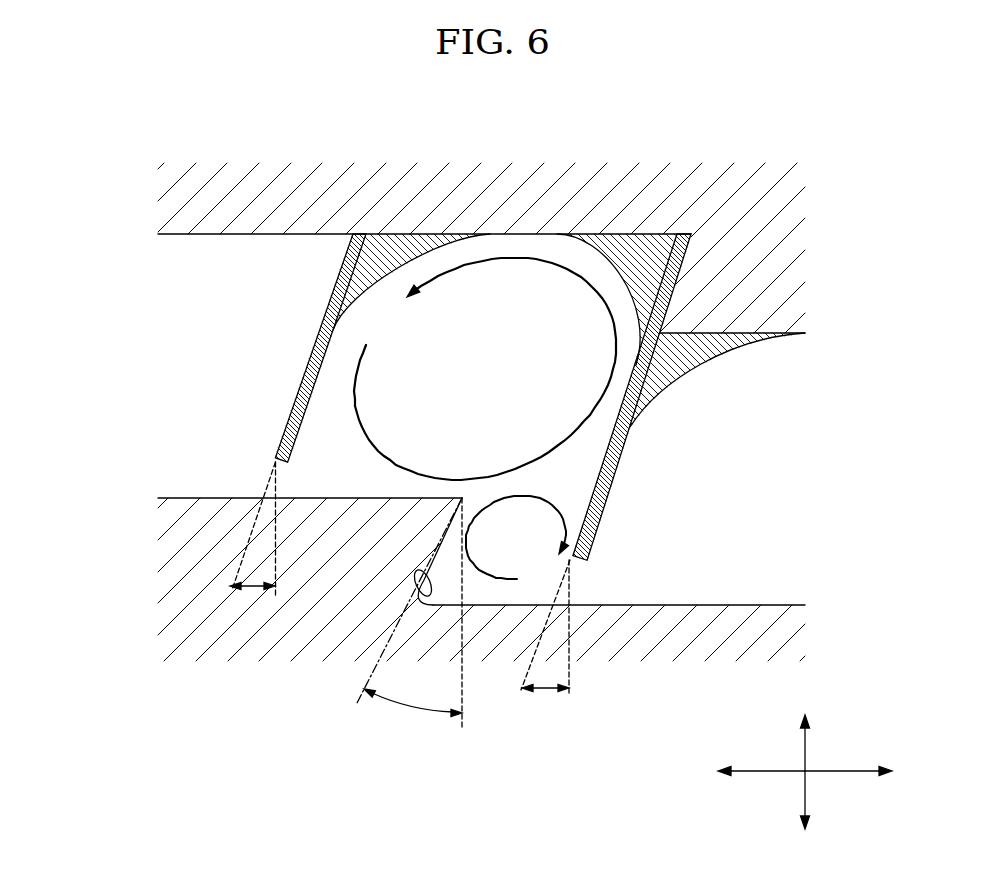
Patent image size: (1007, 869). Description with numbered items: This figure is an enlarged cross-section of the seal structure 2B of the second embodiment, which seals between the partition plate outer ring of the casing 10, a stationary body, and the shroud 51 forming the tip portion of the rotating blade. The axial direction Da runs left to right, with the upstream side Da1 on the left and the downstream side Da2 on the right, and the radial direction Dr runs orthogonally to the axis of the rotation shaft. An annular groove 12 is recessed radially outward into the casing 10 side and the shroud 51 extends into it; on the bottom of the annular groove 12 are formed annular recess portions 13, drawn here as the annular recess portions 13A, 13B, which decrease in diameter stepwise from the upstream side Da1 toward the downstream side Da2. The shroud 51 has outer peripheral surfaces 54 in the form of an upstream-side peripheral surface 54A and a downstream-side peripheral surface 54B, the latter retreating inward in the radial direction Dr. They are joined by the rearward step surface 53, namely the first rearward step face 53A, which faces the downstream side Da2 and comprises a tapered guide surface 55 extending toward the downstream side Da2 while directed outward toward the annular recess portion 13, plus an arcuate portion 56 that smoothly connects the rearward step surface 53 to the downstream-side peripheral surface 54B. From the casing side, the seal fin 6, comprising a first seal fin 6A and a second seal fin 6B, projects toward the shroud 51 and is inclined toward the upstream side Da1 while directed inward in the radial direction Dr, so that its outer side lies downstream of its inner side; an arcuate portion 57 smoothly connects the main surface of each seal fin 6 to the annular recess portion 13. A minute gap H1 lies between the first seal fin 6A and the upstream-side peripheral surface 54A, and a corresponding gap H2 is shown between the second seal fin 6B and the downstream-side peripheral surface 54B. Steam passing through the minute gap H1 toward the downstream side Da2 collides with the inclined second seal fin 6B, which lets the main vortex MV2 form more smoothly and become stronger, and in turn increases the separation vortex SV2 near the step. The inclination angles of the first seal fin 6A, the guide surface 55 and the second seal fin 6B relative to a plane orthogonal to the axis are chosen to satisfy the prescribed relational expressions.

The first wall surface of outer casing 13A is at (190, 239).
The second wall surface of outer casing 13B is at (757, 342).
The annular recess portion 13 is at (551, 262).
The arcuate portion 57 is at (410, 245).
The main vortex MV2 is at (527, 258).
The first seal fin 6A is at (304, 379).
The second seal fin 6B is at (612, 480).
The seal fin 6 is at (446, 397).
The casing 10 is at (162, 252).
The annular groove 12 is at (150, 322).
The seal structure 2B is at (140, 403).
The upstream-side peripheral surface 54A is at (200, 498).
The downstream-side peripheral surface 54B is at (745, 605).
The step surface 54 is at (465, 522).
The first rearward step surface 53A is at (446, 574).
The rearward step surface 53 is at (504, 640).
The shroud 51 is at (762, 640).
The guide surface 55 is at (468, 510).
The arcuate portion 56 is at (414, 572).
The separation vortex SV2 is at (568, 524).
The minute gap H1 is at (282, 482).
The second fin height reference H2 is at (576, 589).
The axial direction Da is at (853, 771).
The upstream side Da1 is at (738, 772).
The downstream side Da2 is at (874, 772).
The radial direction Dr is at (805, 797).